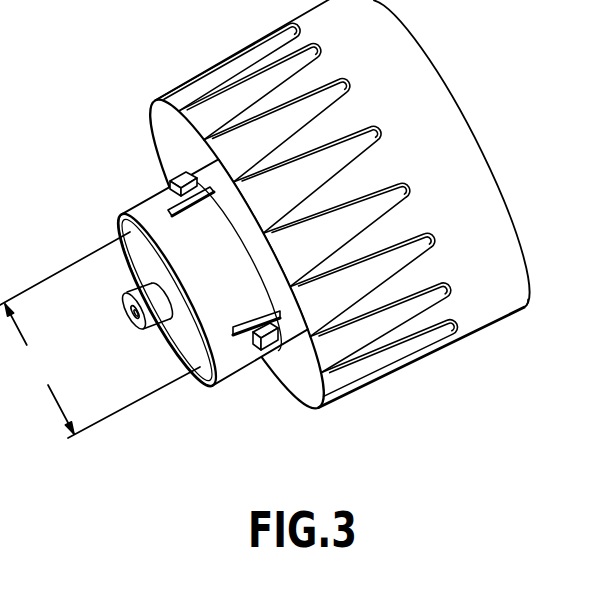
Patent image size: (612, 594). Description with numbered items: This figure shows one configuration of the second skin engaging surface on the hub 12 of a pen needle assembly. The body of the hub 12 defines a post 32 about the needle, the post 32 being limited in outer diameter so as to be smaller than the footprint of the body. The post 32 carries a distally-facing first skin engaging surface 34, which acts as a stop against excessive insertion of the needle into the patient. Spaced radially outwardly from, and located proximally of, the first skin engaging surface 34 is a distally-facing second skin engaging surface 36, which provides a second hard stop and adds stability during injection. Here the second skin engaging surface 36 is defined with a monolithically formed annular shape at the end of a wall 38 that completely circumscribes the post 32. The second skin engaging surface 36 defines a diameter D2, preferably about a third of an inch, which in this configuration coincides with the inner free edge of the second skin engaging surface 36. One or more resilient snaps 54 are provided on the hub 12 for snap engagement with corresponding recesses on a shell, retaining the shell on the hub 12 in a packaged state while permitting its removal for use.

The hub 12 is at (422, 52).
The post 32 is at (164, 338).
The first skin engaging surface 34 is at (128, 320).
The second skin engaging surface 36 is at (210, 374).
The wall 38 is at (153, 205).
The resilient snaps 54 is at (170, 182).
The diameter D2 is at (100, 335).